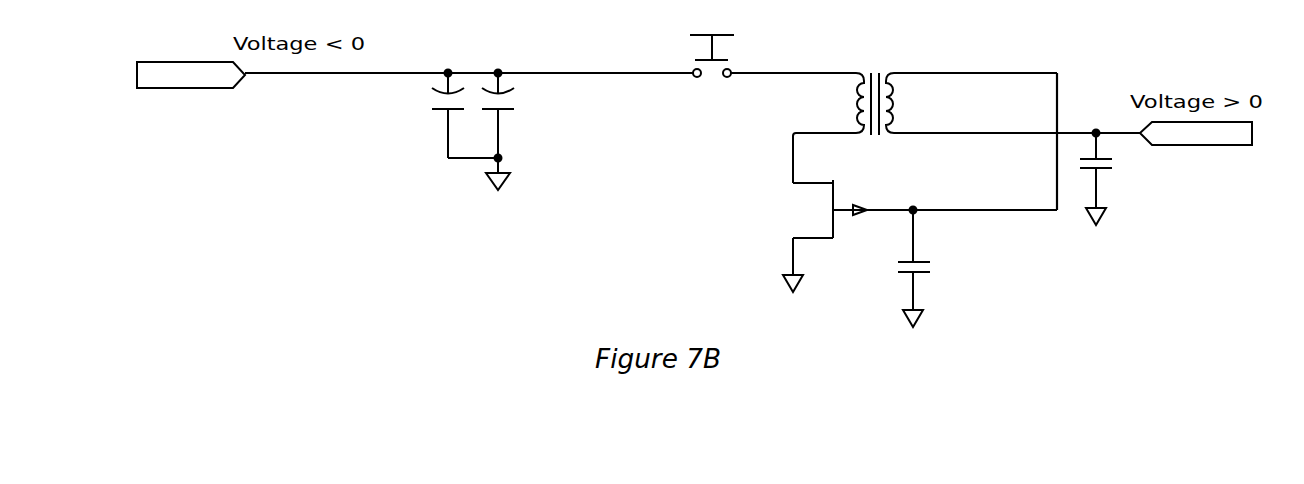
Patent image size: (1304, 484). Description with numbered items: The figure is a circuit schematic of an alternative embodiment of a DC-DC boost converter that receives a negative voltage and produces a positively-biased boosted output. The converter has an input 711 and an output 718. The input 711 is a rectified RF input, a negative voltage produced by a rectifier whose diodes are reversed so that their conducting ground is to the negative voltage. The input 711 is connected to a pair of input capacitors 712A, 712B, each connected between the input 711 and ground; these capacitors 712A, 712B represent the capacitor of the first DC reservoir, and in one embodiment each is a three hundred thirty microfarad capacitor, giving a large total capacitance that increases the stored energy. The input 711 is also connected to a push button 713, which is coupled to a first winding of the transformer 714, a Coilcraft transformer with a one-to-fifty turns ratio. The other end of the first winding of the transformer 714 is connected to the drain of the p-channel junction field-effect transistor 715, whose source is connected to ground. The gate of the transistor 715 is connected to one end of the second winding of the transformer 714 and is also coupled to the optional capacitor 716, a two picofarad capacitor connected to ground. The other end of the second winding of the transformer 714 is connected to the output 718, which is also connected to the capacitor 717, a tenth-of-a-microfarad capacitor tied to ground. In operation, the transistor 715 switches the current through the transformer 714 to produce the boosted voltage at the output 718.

The input 711 is at (191, 93).
The input capacitor 712A is at (427, 104).
The input capacitor 712B is at (514, 101).
The push button 713 is at (688, 22).
The transformer 714 is at (816, 105).
The p-channel junction field-effect transistor 715 is at (821, 252).
The capacitor 716 is at (949, 266).
The capacitor 717 is at (1123, 165).
The output 718 is at (1239, 154).